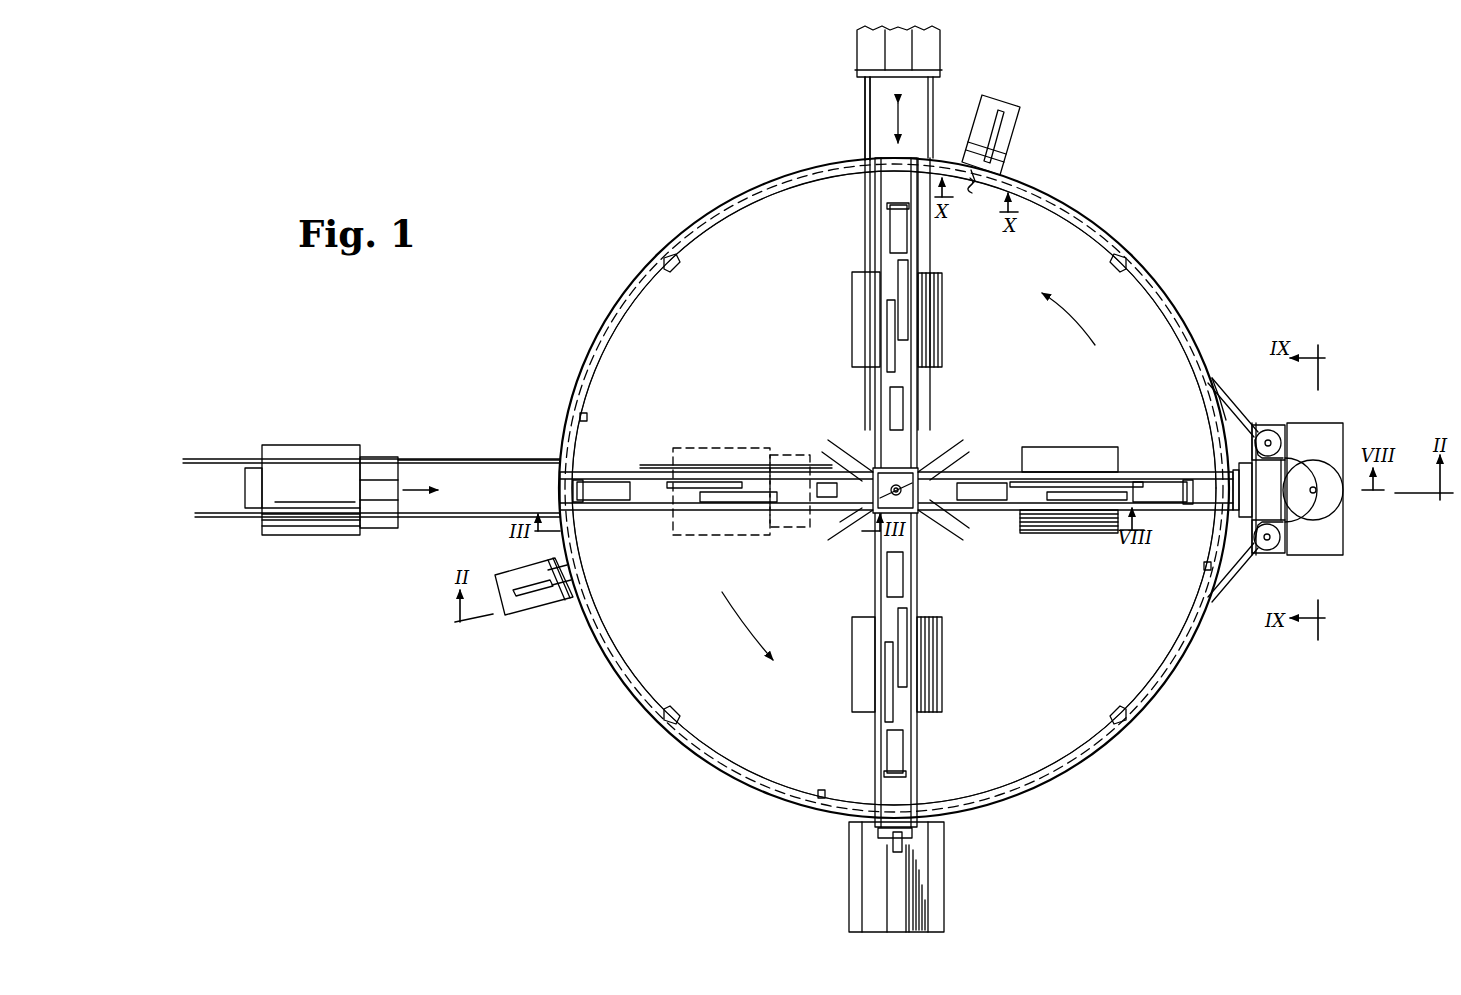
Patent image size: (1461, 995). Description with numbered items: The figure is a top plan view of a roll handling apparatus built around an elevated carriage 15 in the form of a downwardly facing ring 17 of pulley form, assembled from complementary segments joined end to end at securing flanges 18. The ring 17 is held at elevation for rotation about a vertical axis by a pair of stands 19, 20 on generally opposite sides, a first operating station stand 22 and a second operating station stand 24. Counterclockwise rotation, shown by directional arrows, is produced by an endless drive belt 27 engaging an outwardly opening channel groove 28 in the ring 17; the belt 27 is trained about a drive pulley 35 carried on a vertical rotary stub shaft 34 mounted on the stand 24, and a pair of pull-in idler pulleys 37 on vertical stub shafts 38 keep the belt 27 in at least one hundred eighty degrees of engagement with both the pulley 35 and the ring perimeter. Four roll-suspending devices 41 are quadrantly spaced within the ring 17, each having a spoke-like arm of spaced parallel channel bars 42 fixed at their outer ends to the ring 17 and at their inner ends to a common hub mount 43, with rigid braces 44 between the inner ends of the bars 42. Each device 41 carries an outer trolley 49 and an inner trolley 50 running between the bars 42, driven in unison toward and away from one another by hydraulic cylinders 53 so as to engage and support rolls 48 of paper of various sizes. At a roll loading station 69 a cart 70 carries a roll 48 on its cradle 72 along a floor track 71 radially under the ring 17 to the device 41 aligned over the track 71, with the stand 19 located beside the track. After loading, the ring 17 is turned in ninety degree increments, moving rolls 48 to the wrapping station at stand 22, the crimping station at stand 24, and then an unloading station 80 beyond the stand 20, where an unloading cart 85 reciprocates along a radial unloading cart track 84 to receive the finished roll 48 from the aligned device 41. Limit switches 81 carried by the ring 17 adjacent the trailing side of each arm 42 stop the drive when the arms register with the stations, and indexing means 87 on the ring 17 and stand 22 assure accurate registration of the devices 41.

The elevated carriage 15 is at (612, 690).
The carriage ring 17 is at (612, 648).
The securing flanges 18 is at (680, 716).
The stand 19 is at (548, 602).
The stand 20 is at (1005, 172).
The first operating station stand 22 is at (936, 856).
The second operating station stand 24 is at (1300, 560).
The endless drive belt 27 is at (1215, 403).
The channel groove 28 is at (1215, 385).
The rotary stub shaft 34 is at (1318, 495).
The drive pulley 35 is at (1328, 470).
The pull-in idler pulleys 37 is at (1262, 432).
The vertical stub shafts 38 is at (1272, 440).
The roll-suspending devices 41 is at (926, 345).
The channel bars 42 is at (940, 487).
The hub mount 43 is at (890, 470).
The rigid braces 44 is at (935, 445).
The rolls of paper 48 is at (316, 528).
The trolley 49 is at (893, 226).
The trolley 50 is at (895, 400).
The hydraulic cylinders 53 is at (896, 300).
The roll loading station 69 is at (548, 456).
The cart 70 is at (258, 520).
The track 71 is at (476, 518).
The cradle 72 is at (380, 470).
The unloading station 80 is at (851, 153).
The limit switch 81 is at (589, 420).
The unloading cart track 84 is at (934, 108).
The unloading cart 85 is at (945, 57).
The indexing means 87 is at (890, 842).